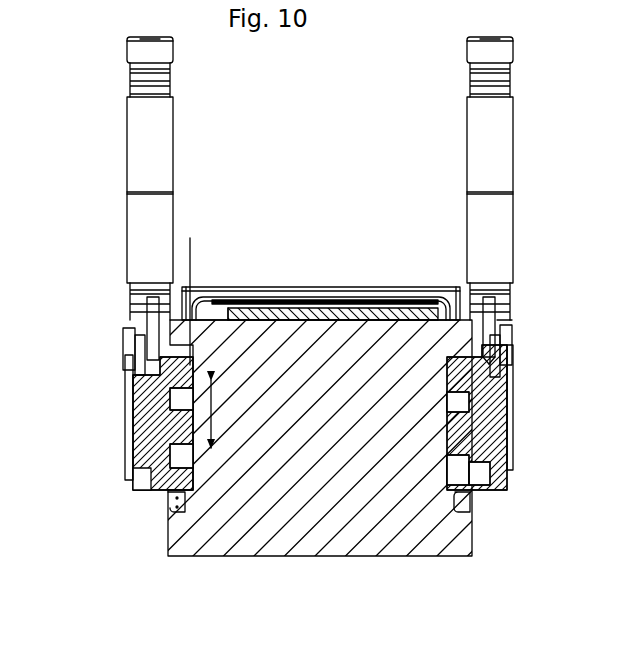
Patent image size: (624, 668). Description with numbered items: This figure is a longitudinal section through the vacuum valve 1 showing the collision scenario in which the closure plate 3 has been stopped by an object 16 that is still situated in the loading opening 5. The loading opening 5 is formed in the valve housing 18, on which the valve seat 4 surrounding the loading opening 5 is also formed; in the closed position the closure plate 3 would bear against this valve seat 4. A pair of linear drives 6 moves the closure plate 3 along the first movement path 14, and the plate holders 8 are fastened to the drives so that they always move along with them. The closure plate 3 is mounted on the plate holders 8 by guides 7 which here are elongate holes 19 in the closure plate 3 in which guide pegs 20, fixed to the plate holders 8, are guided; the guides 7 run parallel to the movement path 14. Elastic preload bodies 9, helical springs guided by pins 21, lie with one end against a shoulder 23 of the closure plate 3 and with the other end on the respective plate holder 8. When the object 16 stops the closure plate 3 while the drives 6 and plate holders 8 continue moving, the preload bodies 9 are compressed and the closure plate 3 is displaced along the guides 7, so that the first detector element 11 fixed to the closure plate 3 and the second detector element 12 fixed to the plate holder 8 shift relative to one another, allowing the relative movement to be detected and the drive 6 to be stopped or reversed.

The vacuum valve 1 is at (374, 238).
The closure plate 3 is at (181, 534).
The valve seat 4 is at (364, 301).
The loading opening 5 is at (414, 310).
The drive 6 is at (158, 162).
The guide 7 is at (172, 404).
The plate holder 8 is at (128, 408).
The elastic preload body 9 is at (126, 345).
The first detector element 11 is at (471, 494).
The second detector element 12 is at (494, 480).
The first movement path 14 is at (214, 396).
The object 16 is at (290, 308).
The valve housing 18 is at (194, 292).
The elongate hole 19 is at (182, 400).
The guide peg 20 is at (428, 594).
The pin 21 is at (147, 299).
The shoulder 23 is at (134, 334).